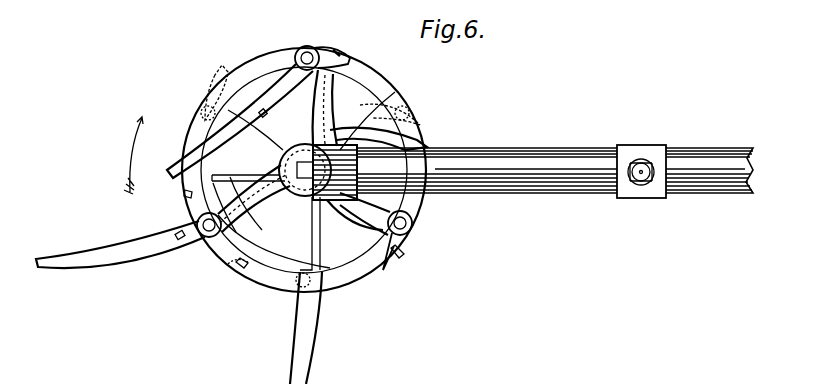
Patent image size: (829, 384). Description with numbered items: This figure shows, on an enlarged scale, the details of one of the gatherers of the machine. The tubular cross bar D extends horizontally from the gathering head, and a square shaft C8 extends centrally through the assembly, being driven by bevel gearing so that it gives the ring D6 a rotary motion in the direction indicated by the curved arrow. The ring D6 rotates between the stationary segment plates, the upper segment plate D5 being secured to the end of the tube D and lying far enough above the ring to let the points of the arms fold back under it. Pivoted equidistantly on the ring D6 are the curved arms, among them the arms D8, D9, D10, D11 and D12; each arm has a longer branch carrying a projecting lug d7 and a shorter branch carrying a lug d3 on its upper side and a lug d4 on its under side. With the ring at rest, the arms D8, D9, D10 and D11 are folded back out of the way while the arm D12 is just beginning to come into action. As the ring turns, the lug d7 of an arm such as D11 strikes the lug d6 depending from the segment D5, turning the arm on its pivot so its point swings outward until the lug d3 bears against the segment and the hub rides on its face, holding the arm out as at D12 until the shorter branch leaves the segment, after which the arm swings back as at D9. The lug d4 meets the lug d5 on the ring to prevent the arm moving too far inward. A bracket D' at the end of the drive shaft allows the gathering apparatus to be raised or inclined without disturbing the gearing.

The tubular cross bar D is at (555, 161).
The bracket D' is at (163, 216).
The upper segment plate D5 is at (272, 283).
The ring D6 is at (385, 82).
The curved arm D8 is at (207, 84).
The curved arm D9 is at (303, 47).
The curved arm D10 is at (372, 121).
The curved arm D11 is at (412, 214).
The curved arm D12 is at (322, 314).
The square shaft C8 is at (305, 178).
The projecting lug d3 is at (386, 268).
The projecting lug d4 is at (226, 264).
The lug d5 is at (350, 56).
The lug d6 is at (280, 241).
The projecting lug d7 is at (264, 110).